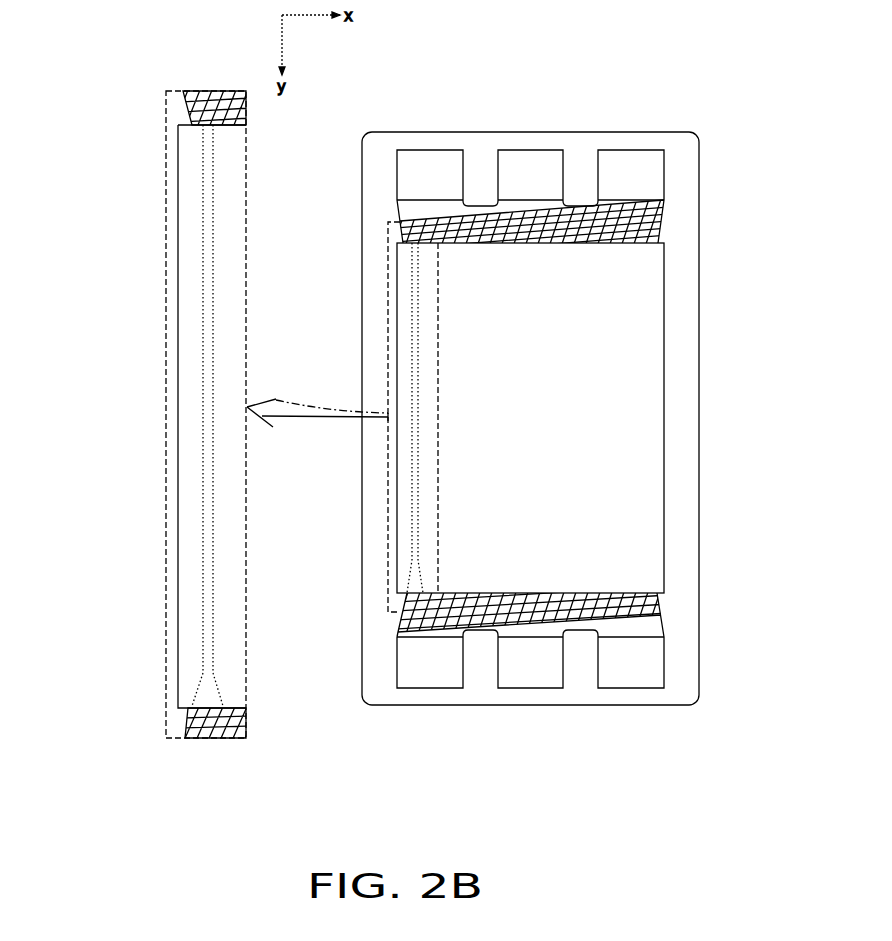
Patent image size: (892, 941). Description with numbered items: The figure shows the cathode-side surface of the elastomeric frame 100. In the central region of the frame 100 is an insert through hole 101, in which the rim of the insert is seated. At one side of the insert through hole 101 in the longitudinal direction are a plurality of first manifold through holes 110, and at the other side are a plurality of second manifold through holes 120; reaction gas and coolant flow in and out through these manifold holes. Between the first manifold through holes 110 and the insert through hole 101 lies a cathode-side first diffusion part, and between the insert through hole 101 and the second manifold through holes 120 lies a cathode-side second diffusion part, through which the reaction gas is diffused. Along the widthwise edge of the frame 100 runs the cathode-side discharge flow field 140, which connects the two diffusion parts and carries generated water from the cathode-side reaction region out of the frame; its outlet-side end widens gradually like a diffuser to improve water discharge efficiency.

The elastomeric frame 100 is at (437, 120).
The first manifold through holes 110 is at (612, 175).
The second manifold through holes 120 is at (447, 675).
The insert through hole 101 is at (632, 466).
The cathode-side discharge flow field 140 is at (205, 438).